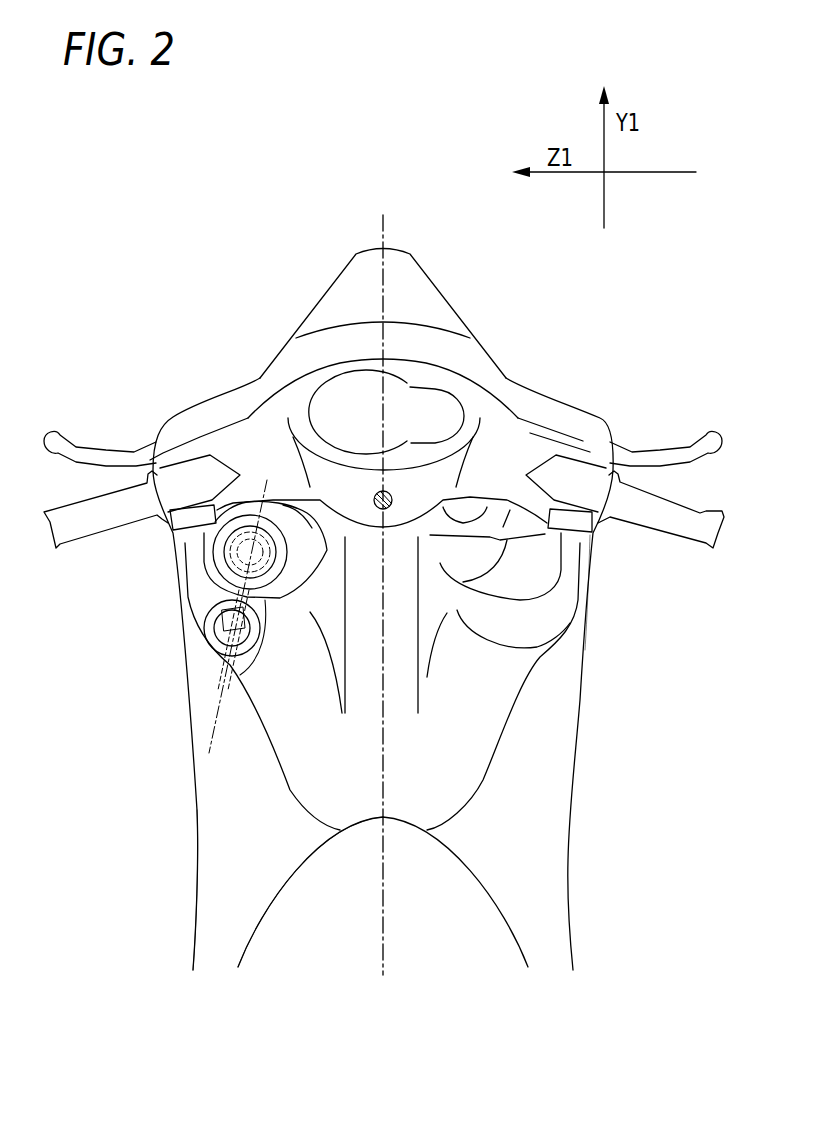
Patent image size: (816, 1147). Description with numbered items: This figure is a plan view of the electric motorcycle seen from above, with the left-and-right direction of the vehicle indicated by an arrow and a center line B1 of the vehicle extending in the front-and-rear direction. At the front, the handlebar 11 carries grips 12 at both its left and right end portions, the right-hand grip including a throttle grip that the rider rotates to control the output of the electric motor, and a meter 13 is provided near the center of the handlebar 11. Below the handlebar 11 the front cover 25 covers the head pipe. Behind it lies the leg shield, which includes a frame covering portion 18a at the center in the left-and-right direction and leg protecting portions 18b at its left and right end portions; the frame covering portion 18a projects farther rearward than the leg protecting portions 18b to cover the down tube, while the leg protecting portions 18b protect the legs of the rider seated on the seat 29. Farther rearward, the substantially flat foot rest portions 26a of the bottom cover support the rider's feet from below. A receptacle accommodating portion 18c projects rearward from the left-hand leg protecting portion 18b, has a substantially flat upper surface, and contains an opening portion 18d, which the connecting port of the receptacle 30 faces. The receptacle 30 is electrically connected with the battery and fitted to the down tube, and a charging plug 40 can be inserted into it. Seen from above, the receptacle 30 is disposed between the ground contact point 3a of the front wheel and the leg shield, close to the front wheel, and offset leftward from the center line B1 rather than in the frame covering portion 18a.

The center line B1 is at (380, 302).
The ground contact point 3a is at (376, 494).
The handlebar 11 is at (583, 467).
The grips 12 is at (705, 513).
The meter 13 is at (430, 403).
The front cover 25 is at (552, 395).
The frame covering portion 18a is at (403, 673).
The leg protecting portions 18b is at (197, 558).
The receptacle accommodating portion 18c is at (237, 660).
The opening portion 18d is at (210, 563).
The foot rest portions 26a is at (552, 810).
The seat 29 is at (287, 920).
The receptacle 30 is at (213, 580).
The charging plug 40 is at (203, 623).